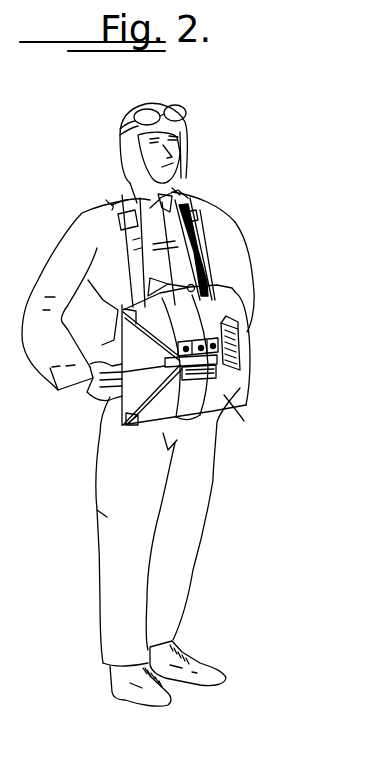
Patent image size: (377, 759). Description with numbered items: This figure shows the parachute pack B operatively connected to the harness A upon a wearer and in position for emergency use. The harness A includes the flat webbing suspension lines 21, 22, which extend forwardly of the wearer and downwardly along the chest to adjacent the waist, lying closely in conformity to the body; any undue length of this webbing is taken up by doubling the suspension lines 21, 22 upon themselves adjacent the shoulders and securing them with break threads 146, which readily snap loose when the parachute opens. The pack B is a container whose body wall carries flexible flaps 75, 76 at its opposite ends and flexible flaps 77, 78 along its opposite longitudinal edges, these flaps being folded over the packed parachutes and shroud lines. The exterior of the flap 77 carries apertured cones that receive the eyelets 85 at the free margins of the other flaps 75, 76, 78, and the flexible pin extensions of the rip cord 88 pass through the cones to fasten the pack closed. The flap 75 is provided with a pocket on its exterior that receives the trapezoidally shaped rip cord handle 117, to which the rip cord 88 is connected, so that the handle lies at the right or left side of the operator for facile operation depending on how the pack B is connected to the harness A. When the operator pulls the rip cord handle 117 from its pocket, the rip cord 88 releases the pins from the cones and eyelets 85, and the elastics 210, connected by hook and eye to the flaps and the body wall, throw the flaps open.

The suspension line 21 is at (133, 263).
The suspension line 22 is at (205, 257).
The break threads 146 is at (125, 230).
The flexible flap 78 is at (217, 298).
The flexible flap 75 is at (239, 323).
The eyelets 85 is at (207, 337).
The rip cord handle 117 is at (241, 338).
The rip cord 88 is at (233, 368).
The flexible flap 76 is at (135, 352).
The flexible flap 77 is at (224, 397).
The elastics 210 is at (201, 419).
The harness A is at (106, 200).
The pack B is at (122, 427).